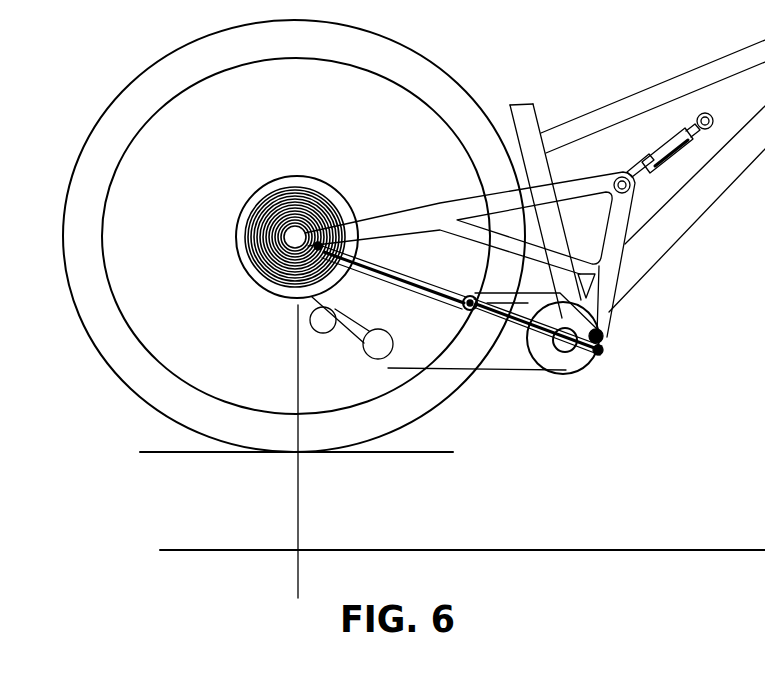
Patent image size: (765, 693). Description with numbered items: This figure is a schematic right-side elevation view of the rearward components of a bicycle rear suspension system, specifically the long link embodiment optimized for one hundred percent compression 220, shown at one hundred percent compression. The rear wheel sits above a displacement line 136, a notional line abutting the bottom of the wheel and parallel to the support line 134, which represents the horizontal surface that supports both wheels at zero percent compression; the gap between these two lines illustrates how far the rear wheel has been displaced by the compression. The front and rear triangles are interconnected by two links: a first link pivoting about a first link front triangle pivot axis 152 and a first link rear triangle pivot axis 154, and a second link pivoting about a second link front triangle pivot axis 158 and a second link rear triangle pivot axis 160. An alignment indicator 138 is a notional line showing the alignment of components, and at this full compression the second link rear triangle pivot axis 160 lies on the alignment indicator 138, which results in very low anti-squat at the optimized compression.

The long link embodiment optimized for 100% compression 220 is at (489, 76).
The second link rear triangle pivot axis 160 is at (280, 288).
The displacement line 136 is at (432, 452).
The support line 134 is at (600, 550).
The alignment indicator 138 is at (438, 297).
The second link front triangle pivot axis 158 is at (473, 323).
The first link front triangle pivot axis 152 is at (600, 356).
The first link rear triangle pivot axis 154 is at (603, 333).